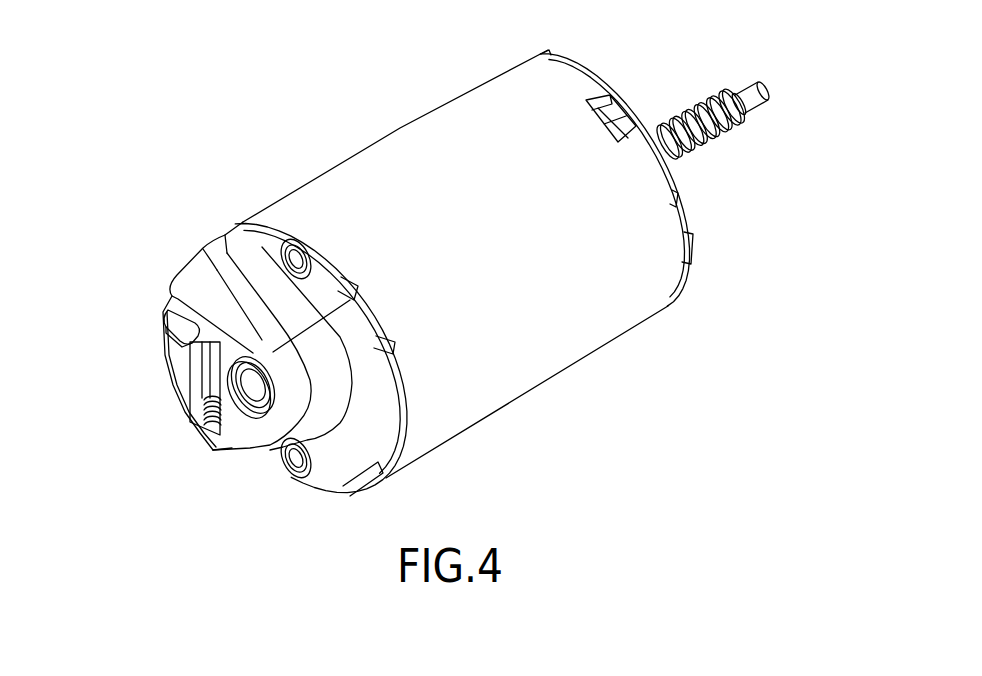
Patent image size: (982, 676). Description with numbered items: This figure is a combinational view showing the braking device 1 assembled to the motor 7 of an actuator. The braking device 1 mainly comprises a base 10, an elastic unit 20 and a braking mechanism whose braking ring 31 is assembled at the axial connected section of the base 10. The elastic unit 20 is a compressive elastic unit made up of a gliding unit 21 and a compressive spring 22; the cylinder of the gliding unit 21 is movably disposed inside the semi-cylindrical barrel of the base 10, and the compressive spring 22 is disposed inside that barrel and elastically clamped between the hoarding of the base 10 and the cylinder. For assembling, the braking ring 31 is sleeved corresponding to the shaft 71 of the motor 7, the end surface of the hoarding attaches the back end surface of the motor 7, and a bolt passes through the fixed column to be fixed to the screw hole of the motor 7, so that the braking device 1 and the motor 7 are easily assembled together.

The braking device 1 is at (186, 444).
The motor 7 is at (354, 136).
The base 10 is at (258, 267).
The elastic unit 20 is at (119, 358).
The gliding unit 21 is at (198, 377).
The compressive spring 22 is at (206, 415).
The braking ring 31 is at (254, 412).
The shaft 71 is at (257, 380).